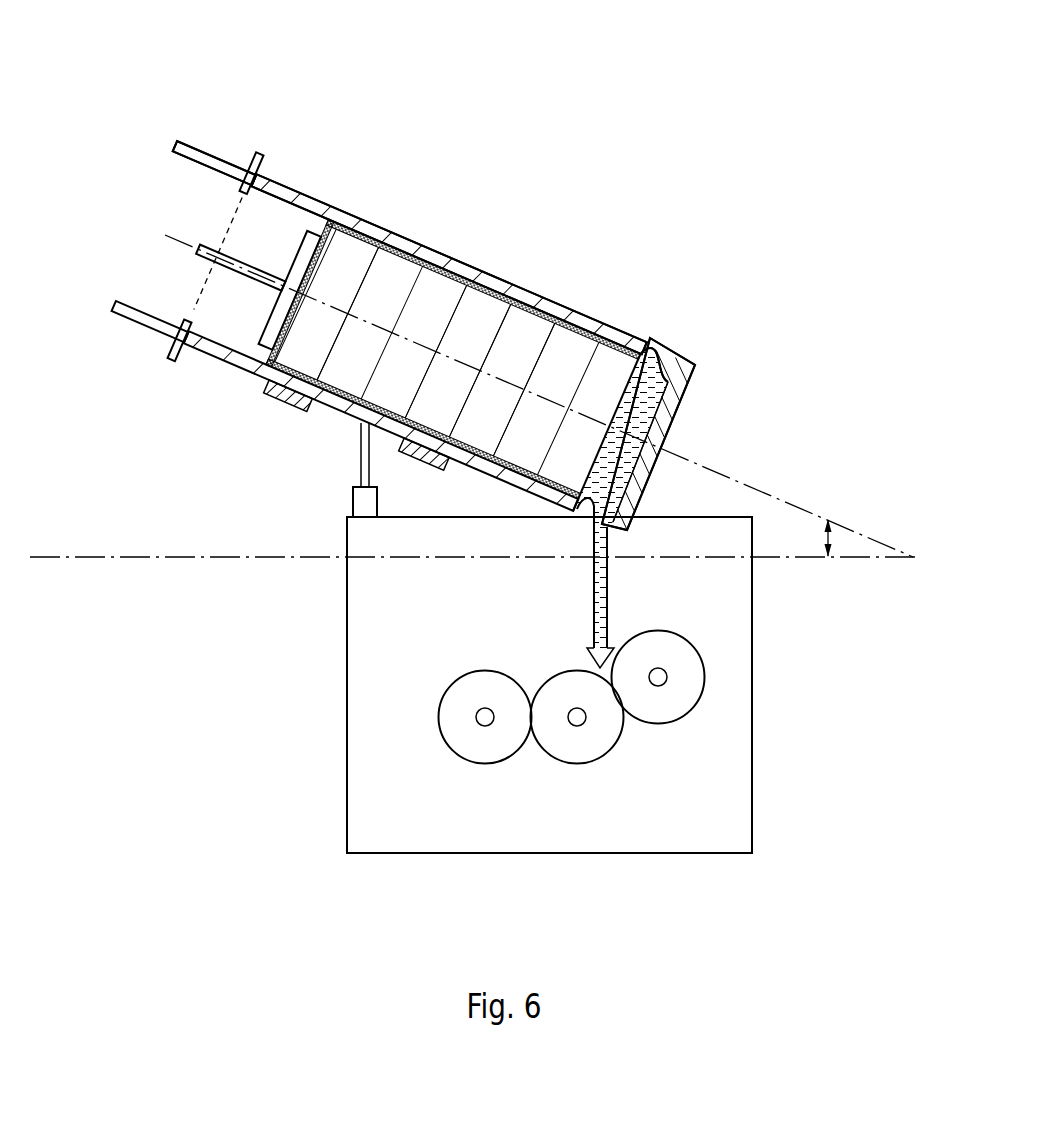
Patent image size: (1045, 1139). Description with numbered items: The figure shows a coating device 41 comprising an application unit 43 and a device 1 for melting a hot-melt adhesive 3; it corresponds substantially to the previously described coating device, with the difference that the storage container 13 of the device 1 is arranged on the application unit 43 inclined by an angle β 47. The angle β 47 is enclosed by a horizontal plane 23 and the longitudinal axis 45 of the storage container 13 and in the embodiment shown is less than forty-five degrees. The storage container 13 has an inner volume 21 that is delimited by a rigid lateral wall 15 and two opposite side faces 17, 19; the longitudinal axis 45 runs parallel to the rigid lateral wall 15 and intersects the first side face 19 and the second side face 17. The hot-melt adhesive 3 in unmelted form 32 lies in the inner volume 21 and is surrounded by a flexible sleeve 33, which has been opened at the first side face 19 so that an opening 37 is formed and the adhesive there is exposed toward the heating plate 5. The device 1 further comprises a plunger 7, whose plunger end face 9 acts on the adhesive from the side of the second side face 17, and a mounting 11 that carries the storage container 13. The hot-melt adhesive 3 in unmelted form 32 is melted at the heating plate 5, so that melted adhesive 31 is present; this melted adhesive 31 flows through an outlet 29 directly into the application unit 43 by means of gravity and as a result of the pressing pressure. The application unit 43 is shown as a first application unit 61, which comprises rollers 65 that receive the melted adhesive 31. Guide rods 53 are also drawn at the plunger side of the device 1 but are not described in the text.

The device for melting 1 is at (194, 104).
The hot-melt adhesive 3 is at (534, 338).
The heating plate 5 is at (692, 360).
The plunger 7 is at (200, 251).
The plunger end face 9 is at (336, 246).
The mounting 11 is at (288, 404).
The storage container 13 is at (466, 246).
The rigid lateral wall 15 is at (417, 244).
The second side face 17 is at (228, 211).
The first side face 19 is at (678, 381).
The inner volume 21 is at (494, 317).
The horizontal plane 23 is at (792, 563).
The outlet 29 is at (593, 538).
The melted adhesive 31 is at (620, 466).
The unmelted form 32 is at (436, 352).
The flexible sleeve 33 is at (372, 226).
The opening 37 is at (640, 410).
The coating device 41 is at (750, 207).
The application unit 43 is at (766, 704).
The longitudinal axis 45 is at (762, 493).
The angle β 47 is at (826, 535).
The guide rods 53 is at (178, 140).
The first application unit 61 is at (549, 685).
The rollers 65 is at (662, 703).